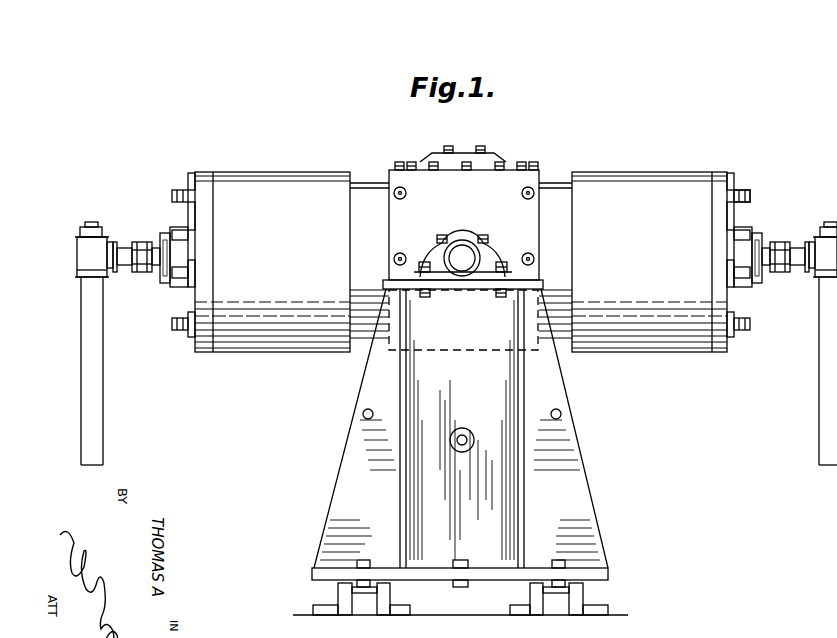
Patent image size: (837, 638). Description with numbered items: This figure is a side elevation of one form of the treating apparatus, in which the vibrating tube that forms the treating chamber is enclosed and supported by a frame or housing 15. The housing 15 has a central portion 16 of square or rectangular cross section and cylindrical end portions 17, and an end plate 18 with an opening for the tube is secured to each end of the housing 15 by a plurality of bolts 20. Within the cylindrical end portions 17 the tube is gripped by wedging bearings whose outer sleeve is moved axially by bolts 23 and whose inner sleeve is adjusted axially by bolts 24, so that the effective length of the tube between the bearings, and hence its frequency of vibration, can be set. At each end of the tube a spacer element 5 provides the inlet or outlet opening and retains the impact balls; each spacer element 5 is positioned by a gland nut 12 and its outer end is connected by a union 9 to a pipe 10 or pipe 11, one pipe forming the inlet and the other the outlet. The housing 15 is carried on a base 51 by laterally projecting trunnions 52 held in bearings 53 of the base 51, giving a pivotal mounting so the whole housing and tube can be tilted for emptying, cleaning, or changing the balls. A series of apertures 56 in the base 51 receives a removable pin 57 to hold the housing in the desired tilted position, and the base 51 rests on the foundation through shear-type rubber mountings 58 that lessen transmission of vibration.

The spacer element 5 is at (157, 265).
The union 9 is at (141, 273).
The pipe 10 is at (803, 270).
The pipe 11 is at (118, 257).
The gland nut 12 is at (162, 243).
The frame 15 is at (553, 179).
The central portion 16 is at (371, 182).
The end portion 17 is at (313, 170).
The end plate 18 is at (203, 182).
The bolt 20 is at (188, 347).
The bolt 23 is at (172, 325).
The bolt 24 is at (737, 303).
The base 51 is at (578, 510).
The trunnion 52 is at (463, 262).
The bearing 53 is at (442, 278).
The aperture 56 is at (362, 414).
The pin 57 is at (470, 433).
The rubber mounting 58 is at (383, 596).